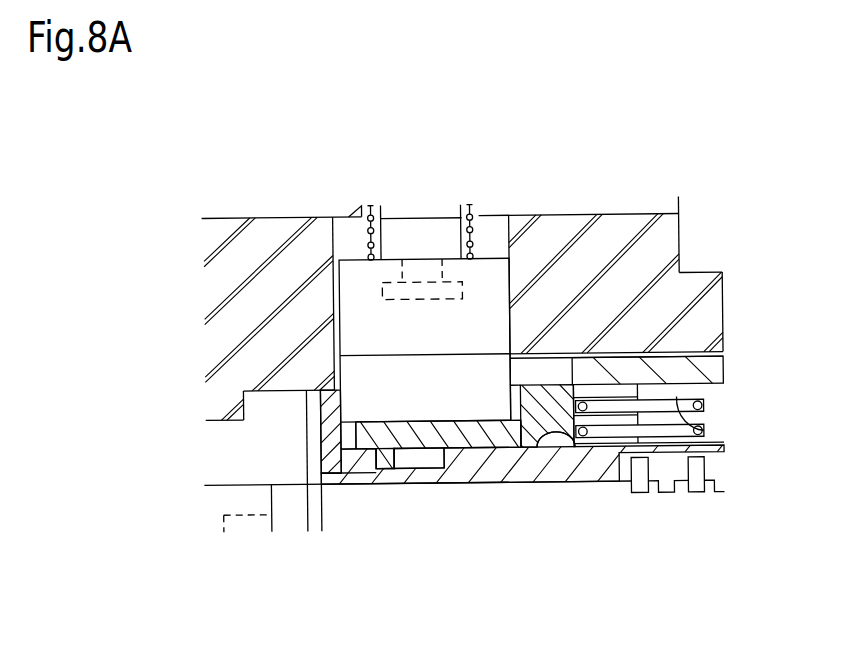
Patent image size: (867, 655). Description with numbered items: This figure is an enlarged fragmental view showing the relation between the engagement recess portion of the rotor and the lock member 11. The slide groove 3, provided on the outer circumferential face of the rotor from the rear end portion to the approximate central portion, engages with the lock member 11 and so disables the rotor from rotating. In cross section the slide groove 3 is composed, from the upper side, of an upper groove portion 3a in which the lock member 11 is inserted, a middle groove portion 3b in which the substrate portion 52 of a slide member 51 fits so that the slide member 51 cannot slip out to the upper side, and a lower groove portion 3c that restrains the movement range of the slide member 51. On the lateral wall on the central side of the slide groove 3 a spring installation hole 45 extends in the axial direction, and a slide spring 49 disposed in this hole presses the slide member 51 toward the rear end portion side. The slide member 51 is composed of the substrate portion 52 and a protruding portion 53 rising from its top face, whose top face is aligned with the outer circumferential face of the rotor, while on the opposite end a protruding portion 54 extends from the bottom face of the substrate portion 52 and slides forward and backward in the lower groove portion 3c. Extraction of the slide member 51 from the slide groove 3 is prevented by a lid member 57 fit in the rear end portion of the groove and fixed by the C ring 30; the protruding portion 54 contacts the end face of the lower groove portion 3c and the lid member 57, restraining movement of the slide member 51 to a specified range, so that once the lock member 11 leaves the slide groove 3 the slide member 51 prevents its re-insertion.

The slide groove 3 is at (569, 434).
The upper groove portion 3a is at (510, 396).
The middle groove portion 3b is at (346, 431).
The lower groove portion 3c is at (412, 460).
The lock member 11 is at (382, 384).
The C ring 30 is at (312, 469).
The spring installation hole 45 is at (703, 419).
The slide spring 49 is at (636, 430).
The slide member 51 is at (504, 436).
The substrate portion 52 is at (462, 437).
The protruding portion 53 is at (545, 401).
The protruding portion 54 is at (382, 456).
The lid member 57 is at (329, 449).